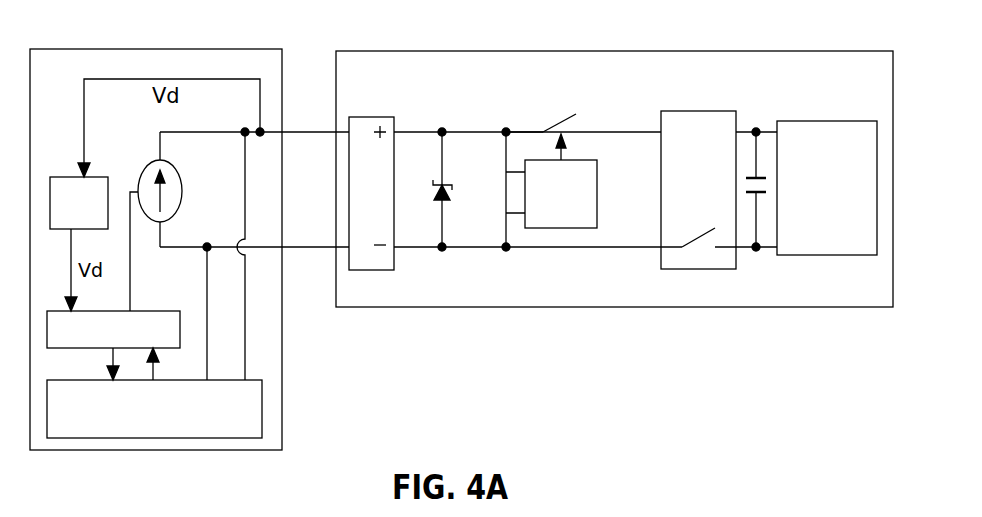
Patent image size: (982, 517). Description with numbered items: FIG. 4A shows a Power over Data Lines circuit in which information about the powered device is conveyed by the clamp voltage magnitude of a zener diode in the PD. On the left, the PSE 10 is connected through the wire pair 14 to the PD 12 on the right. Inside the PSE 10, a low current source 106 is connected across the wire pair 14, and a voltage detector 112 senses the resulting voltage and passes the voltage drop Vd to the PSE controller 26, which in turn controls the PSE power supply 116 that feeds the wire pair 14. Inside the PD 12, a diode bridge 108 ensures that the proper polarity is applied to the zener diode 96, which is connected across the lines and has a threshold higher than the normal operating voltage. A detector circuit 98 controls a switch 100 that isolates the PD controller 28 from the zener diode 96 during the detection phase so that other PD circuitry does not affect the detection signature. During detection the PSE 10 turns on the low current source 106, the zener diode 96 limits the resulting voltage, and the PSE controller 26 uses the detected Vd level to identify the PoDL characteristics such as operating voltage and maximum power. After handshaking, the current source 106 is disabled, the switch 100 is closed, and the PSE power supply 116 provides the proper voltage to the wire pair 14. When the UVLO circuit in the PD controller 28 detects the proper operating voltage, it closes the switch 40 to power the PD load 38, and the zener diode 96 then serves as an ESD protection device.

The PSE 10 is at (158, 48).
The PD 12 is at (603, 50).
The wire pair 14 is at (305, 128).
The PSE controller 26 is at (161, 310).
The PD controller 28 is at (695, 110).
The PD load 38 is at (832, 120).
The switch 40 is at (698, 250).
The zener diode 96 is at (460, 190).
The detector circuit 98 is at (551, 194).
The switch 100 is at (554, 119).
The low current source 106 is at (182, 178).
The diode bridge 108 is at (368, 114).
The voltage detector 112 is at (79, 203).
The PSE power supply 116 is at (143, 438).